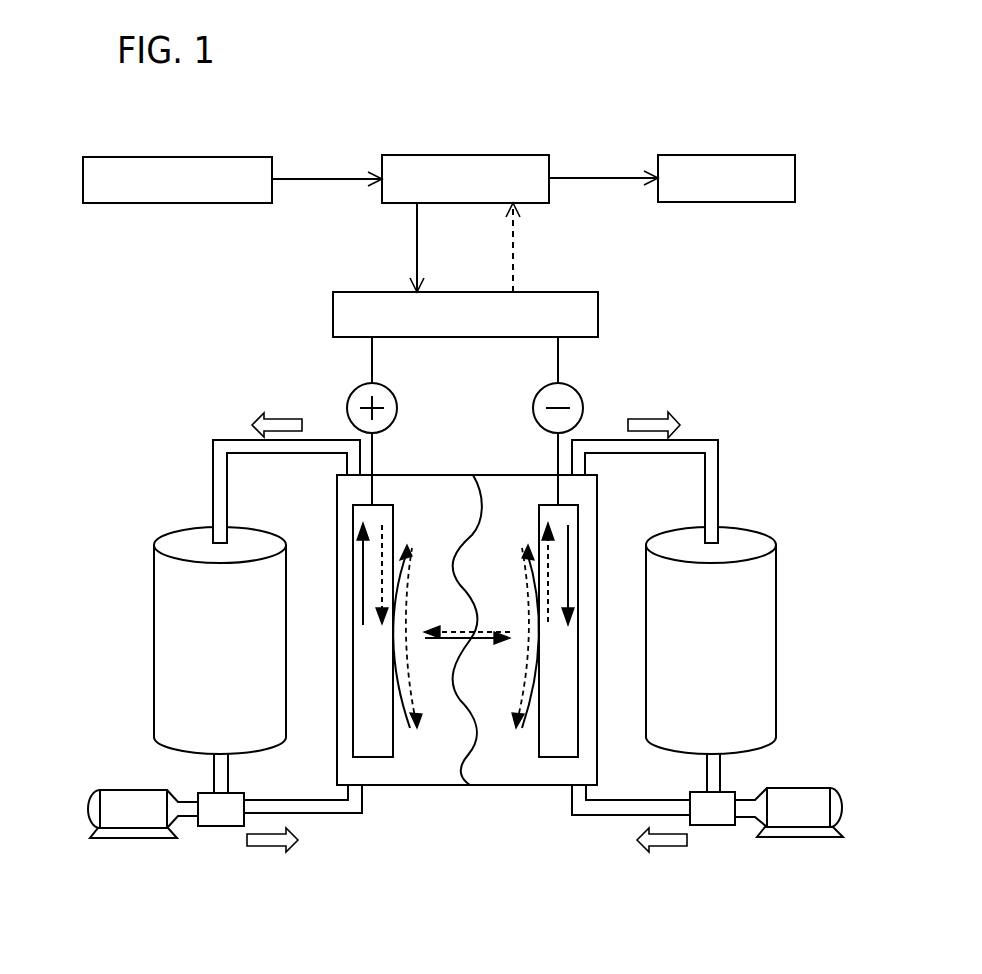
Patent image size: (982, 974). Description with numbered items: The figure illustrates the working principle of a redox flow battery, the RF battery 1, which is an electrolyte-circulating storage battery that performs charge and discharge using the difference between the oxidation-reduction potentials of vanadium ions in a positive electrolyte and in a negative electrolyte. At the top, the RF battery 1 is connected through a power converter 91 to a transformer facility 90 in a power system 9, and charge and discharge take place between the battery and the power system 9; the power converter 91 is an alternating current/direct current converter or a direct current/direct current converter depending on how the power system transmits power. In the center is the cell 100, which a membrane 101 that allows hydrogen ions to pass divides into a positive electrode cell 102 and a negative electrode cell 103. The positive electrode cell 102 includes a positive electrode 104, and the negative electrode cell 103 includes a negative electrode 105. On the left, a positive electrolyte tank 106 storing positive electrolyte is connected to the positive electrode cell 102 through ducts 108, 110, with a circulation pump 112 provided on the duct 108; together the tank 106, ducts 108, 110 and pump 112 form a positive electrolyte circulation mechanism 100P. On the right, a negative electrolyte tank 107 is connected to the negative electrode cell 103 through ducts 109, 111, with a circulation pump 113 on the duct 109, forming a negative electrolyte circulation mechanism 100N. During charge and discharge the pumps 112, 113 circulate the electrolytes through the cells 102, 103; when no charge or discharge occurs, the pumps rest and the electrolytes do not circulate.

The RF battery 1 is at (757, 375).
The power system 9 is at (318, 175).
The transformer facility 90 is at (515, 155).
The power converter 91 is at (333, 318).
The cell 100 is at (467, 705).
The membrane 101 is at (477, 770).
The positive electrode cell 102 is at (403, 790).
The negative electrode cell 103 is at (533, 790).
The positive electrode 104 is at (352, 748).
The negative electrode 105 is at (580, 750).
The positive electrolyte tank 106 is at (170, 530).
The negative electrolyte tank 107 is at (765, 532).
The duct 108 is at (326, 812).
The duct 109 is at (608, 813).
The duct 110 is at (228, 440).
The duct 111 is at (700, 440).
The circulation pump 112 is at (112, 790).
The circulation pump 113 is at (815, 788).
The positive electrolyte circulation mechanism 100P is at (218, 652).
The negative electrolyte circulation mechanism 100N is at (716, 650).